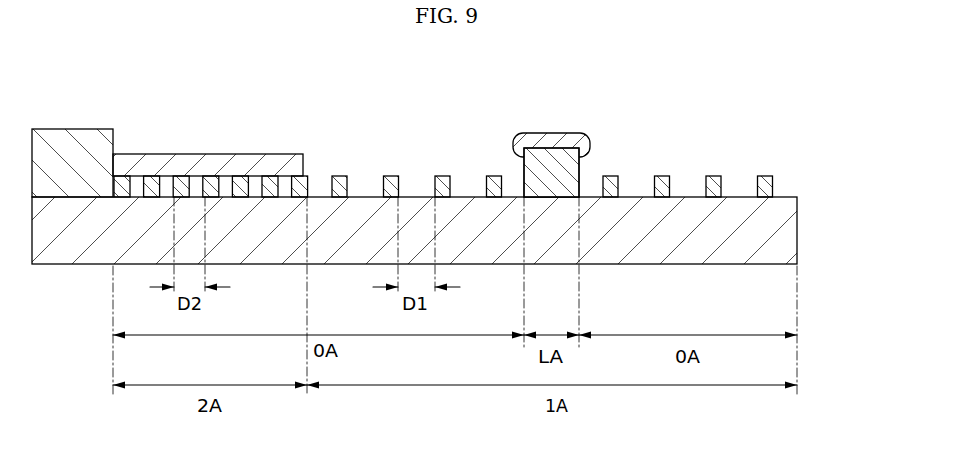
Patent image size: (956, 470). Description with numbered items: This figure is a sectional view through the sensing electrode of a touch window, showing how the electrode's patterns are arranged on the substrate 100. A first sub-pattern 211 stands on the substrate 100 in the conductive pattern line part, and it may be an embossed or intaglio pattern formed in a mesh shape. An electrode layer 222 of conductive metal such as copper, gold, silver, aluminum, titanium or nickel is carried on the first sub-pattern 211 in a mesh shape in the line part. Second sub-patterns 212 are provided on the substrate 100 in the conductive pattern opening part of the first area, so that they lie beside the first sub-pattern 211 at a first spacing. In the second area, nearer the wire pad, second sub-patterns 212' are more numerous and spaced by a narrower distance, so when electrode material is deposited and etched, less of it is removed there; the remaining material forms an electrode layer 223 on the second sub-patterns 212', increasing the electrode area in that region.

The substrate 100 is at (793, 232).
The electrode layer 223 is at (173, 162).
The second sub-pattern 212' is at (211, 155).
The second sub-pattern 212 is at (552, 158).
The electrode layer 222 is at (535, 138).
The first sub-pattern 211 is at (563, 153).